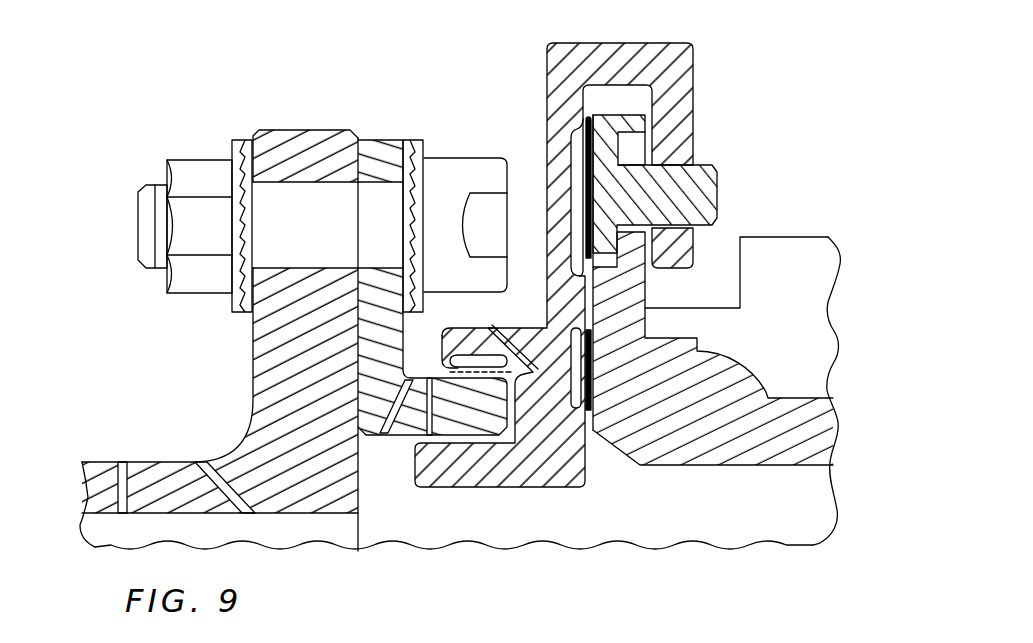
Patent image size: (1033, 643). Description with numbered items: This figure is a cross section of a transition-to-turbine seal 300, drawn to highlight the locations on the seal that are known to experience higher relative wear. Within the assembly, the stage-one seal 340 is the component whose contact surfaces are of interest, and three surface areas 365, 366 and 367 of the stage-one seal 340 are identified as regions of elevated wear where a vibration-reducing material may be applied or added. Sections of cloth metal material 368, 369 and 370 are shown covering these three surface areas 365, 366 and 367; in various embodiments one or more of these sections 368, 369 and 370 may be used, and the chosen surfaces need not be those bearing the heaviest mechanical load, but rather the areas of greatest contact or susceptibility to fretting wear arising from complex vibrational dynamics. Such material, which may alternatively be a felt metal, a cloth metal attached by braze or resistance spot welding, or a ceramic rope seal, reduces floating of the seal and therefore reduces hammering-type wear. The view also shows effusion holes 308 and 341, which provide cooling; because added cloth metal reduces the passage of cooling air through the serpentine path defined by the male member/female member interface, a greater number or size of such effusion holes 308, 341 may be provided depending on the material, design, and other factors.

The transition-to-turbine seal 300 is at (400, 90).
The effusion hole 308 is at (440, 417).
The stage-1 seal 340 is at (567, 87).
The effusion hole 341 is at (490, 356).
The surface area 365 is at (496, 304).
The surface area 366 is at (571, 141).
The surface area 367 is at (571, 376).
The section of cloth metal material 368 is at (572, 338).
The section of cloth metal material 369 is at (594, 207).
The section of cloth metal material 370 is at (590, 394).